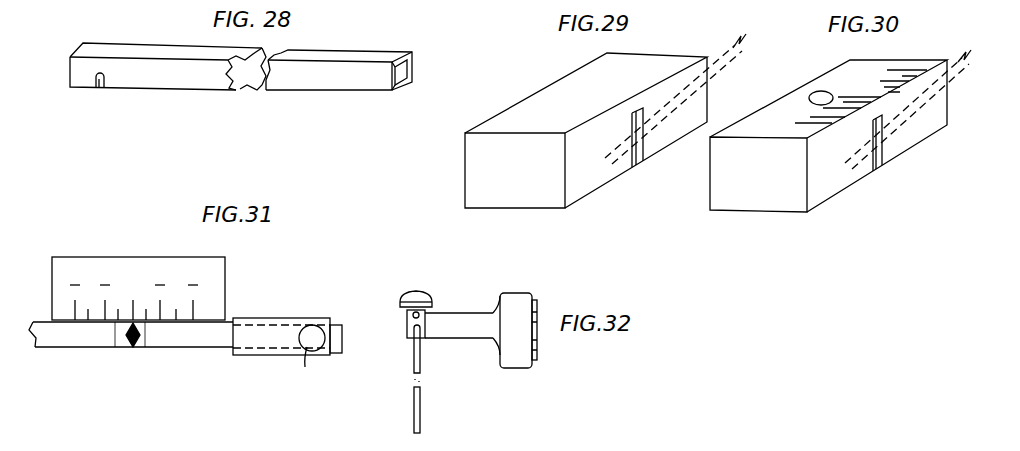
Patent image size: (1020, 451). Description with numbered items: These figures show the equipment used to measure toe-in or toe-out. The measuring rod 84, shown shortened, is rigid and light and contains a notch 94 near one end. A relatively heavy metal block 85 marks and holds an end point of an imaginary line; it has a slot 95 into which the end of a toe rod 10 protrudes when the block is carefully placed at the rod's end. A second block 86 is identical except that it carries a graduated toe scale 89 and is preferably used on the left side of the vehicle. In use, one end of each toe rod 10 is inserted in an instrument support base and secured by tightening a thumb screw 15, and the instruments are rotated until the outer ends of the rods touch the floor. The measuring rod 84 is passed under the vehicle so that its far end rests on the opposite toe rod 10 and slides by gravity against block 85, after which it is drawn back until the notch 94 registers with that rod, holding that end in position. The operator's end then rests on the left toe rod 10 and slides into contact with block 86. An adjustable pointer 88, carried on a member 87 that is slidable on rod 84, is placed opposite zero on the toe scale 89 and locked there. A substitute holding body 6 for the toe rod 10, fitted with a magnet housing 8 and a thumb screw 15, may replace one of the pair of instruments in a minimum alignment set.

In FIG. 28, the measuring rod 84 is at (213, 82).
In FIG. 31, the measuring rod 84 is at (75, 345).
In FIG. 28, the notch 94 is at (98, 87).
In FIG. 29, the block 85 is at (477, 162).
In FIG. 29, the slot 95 is at (638, 167).
In FIG. 30, the slot 95 is at (878, 171).
In FIG. 30, the block 86 is at (743, 210).
In FIG. 30, the graduated toe scale 89 is at (802, 118).
In FIG. 31, the graduated toe scale 89 is at (73, 272).
In FIG. 29, the toe rod 10 is at (726, 57).
In FIG. 30, the toe rod 10 is at (912, 108).
In FIG. 32, the toe rod 10 is at (420, 362).
In FIG. 31, the adjustable pointer 88 is at (135, 347).
In FIG. 31, the slidable member 87 is at (282, 357).
In FIG. 32, the thumb screw 15 is at (414, 291).
In FIG. 32, the holding body 6 is at (467, 320).
In FIG. 32, the magnet housing 8 is at (517, 293).